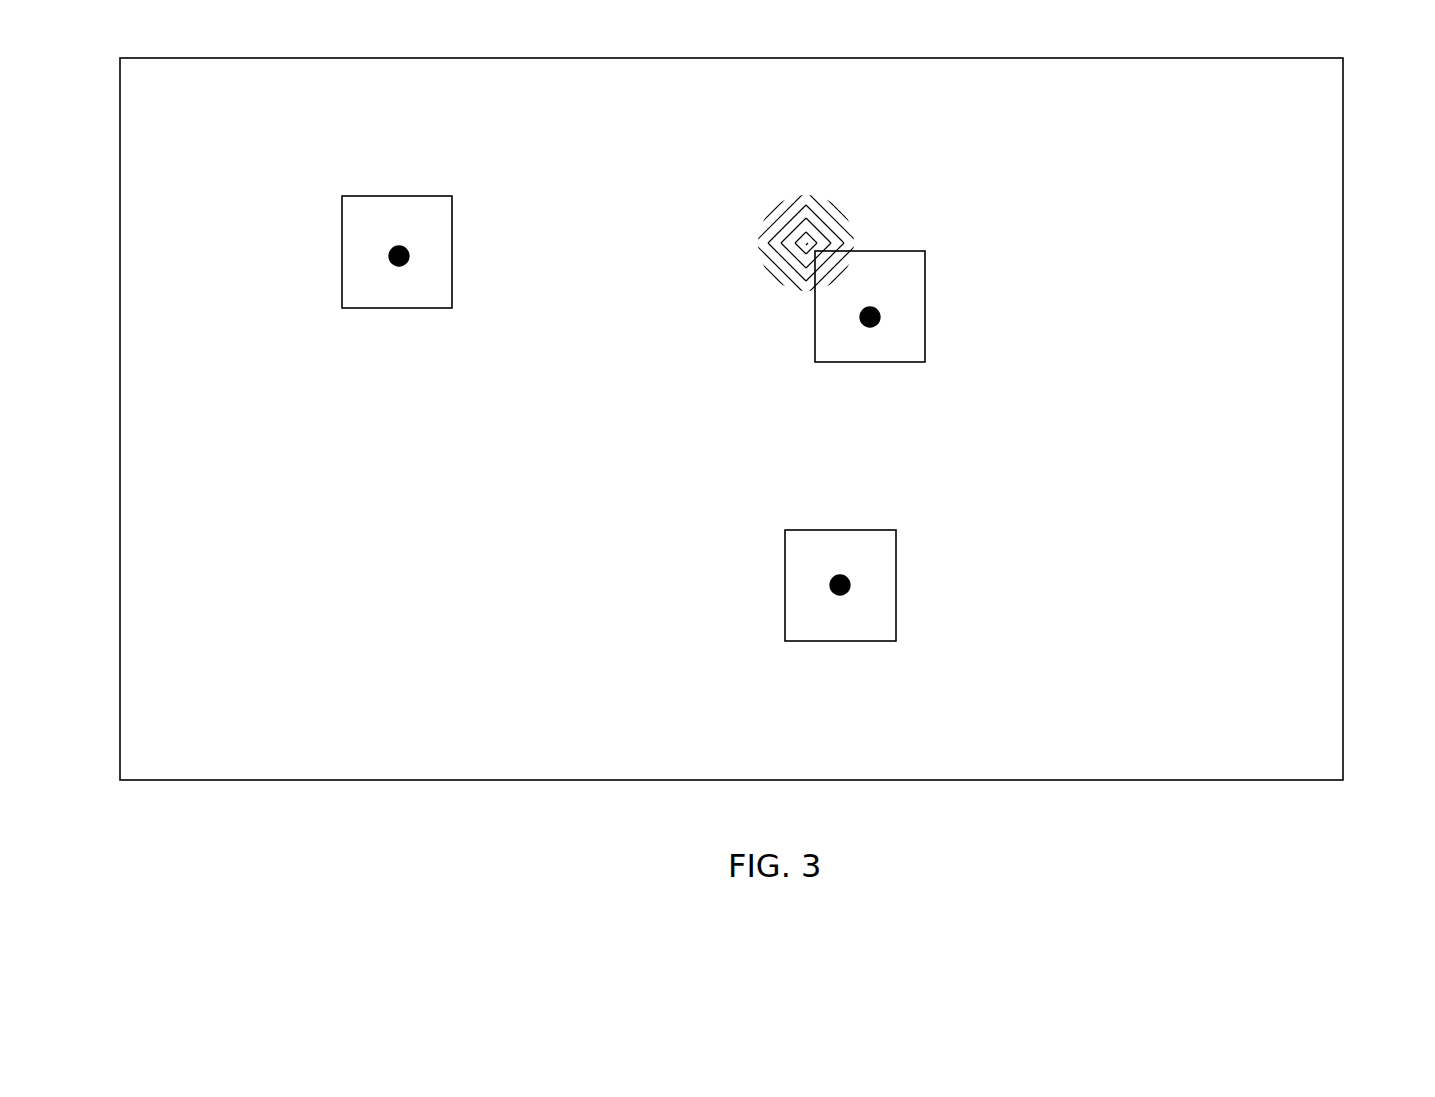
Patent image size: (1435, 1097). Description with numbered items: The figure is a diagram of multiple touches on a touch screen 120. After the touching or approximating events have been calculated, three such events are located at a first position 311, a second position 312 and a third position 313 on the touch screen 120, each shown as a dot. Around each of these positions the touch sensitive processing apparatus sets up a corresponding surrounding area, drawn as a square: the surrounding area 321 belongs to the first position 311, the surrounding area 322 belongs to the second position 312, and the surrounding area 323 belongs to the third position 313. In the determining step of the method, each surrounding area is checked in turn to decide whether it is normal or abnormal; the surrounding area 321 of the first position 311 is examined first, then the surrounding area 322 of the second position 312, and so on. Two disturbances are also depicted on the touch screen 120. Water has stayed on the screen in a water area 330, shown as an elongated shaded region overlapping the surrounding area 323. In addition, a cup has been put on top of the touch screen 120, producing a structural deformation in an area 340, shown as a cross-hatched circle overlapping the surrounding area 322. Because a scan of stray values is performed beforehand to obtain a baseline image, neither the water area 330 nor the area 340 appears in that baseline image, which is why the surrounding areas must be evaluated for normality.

The touch screen 120 is at (1417, 40).
The first position 311 is at (395, 267).
The second position 312 is at (867, 327).
The third position 313 is at (833, 592).
The surrounding area 321 is at (398, 188).
The surrounding area 322 is at (870, 250).
The surrounding area 323 is at (835, 527).
The water area 330 is at (953, 500).
The area 340 is at (770, 213).